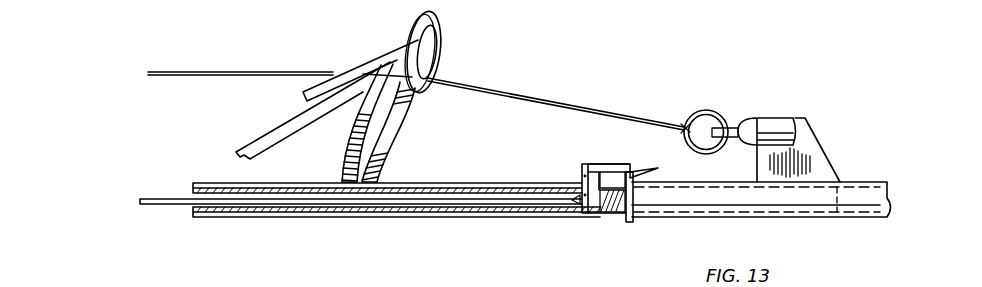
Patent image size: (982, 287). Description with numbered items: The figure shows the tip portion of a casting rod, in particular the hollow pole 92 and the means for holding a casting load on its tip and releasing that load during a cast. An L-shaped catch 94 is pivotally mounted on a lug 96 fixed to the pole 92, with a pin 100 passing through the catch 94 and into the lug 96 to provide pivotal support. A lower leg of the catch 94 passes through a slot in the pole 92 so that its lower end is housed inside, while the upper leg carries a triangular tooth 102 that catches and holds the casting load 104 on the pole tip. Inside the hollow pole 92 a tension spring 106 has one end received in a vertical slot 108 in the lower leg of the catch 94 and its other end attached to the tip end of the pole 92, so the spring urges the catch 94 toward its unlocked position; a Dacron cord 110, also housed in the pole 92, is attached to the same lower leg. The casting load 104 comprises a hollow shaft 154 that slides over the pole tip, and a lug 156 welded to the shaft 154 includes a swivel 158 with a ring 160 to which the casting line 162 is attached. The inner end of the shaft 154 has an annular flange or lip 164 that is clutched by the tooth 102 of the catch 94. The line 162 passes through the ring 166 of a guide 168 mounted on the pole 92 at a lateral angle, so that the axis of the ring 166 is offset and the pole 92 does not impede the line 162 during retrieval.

The pole 92 is at (267, 219).
The L-shaped catch 94 is at (624, 160).
The lug 96 is at (584, 162).
The pin 100 is at (584, 170).
The triangular tooth 102 is at (634, 175).
The casting load 104 is at (865, 176).
The tension spring 106 is at (611, 213).
The vertical slot 108 is at (587, 213).
The Dacron cord 110 is at (163, 207).
The hollow shaft 154 is at (841, 218).
The lug 156 is at (812, 134).
The swivel 158 is at (751, 118).
The ring 160 is at (706, 110).
The casting line 162 is at (535, 93).
The annular flange or lip 164 is at (631, 222).
The ring 166 is at (440, 20).
The guide 168 is at (392, 38).